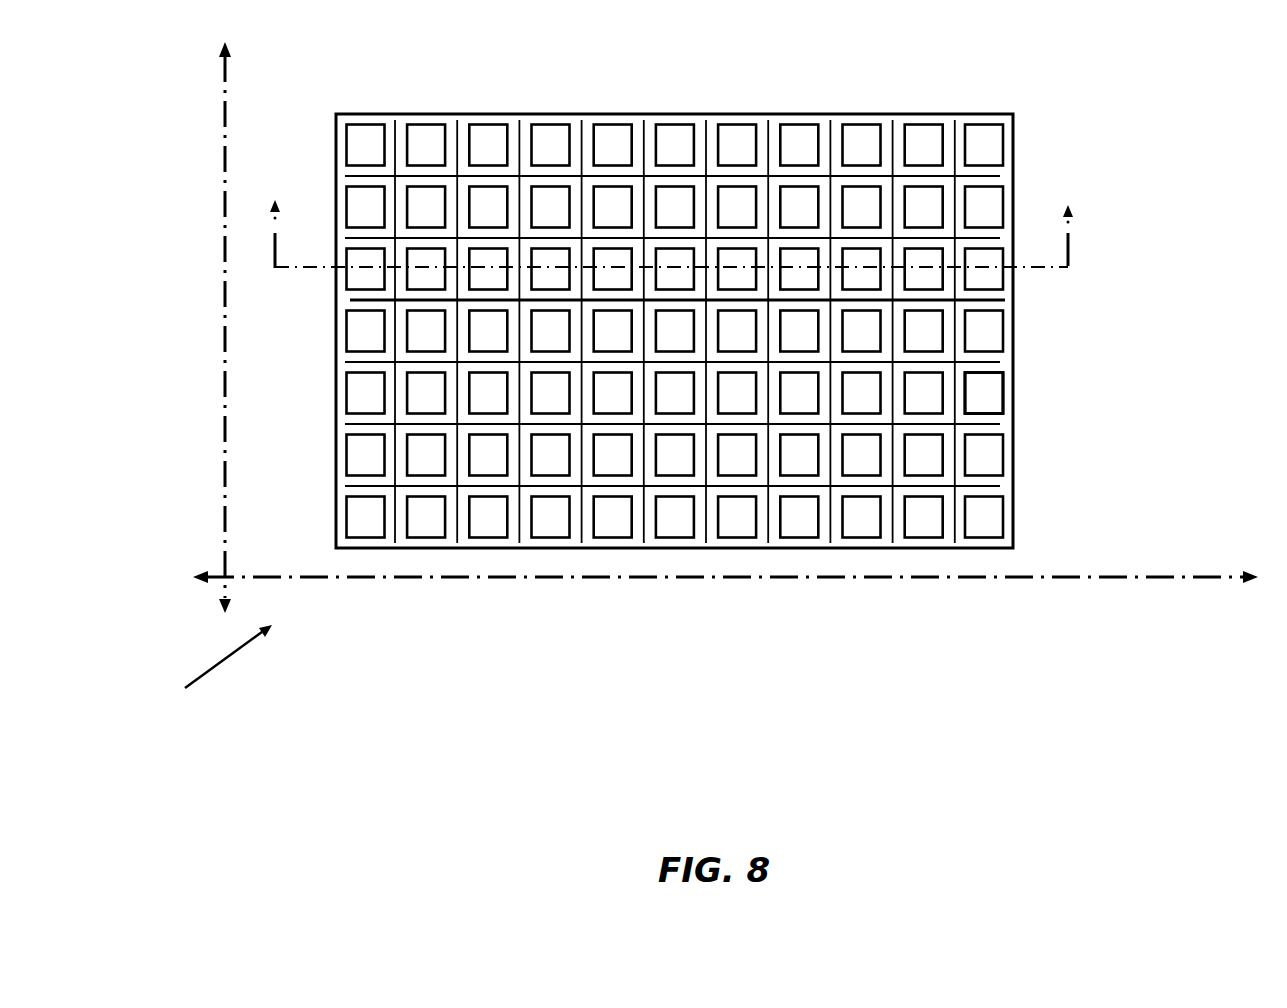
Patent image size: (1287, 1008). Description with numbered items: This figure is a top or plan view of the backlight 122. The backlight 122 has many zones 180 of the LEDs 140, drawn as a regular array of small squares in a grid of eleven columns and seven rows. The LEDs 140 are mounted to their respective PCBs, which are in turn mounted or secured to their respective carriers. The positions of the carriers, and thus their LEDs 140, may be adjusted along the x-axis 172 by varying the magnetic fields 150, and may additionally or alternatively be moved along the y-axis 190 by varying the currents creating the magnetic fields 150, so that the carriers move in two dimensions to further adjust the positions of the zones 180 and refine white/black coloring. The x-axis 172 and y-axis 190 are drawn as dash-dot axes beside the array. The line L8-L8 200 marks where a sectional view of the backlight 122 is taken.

The y-axis 190 is at (207, 80).
The x-axis 172 is at (1215, 603).
The backlight 122 is at (209, 663).
The line L8-L8 200 is at (1085, 189).
The LEDs 140 is at (1005, 398).
The magnetic fields 150 is at (1044, 393).
The zones 180 is at (1044, 398).